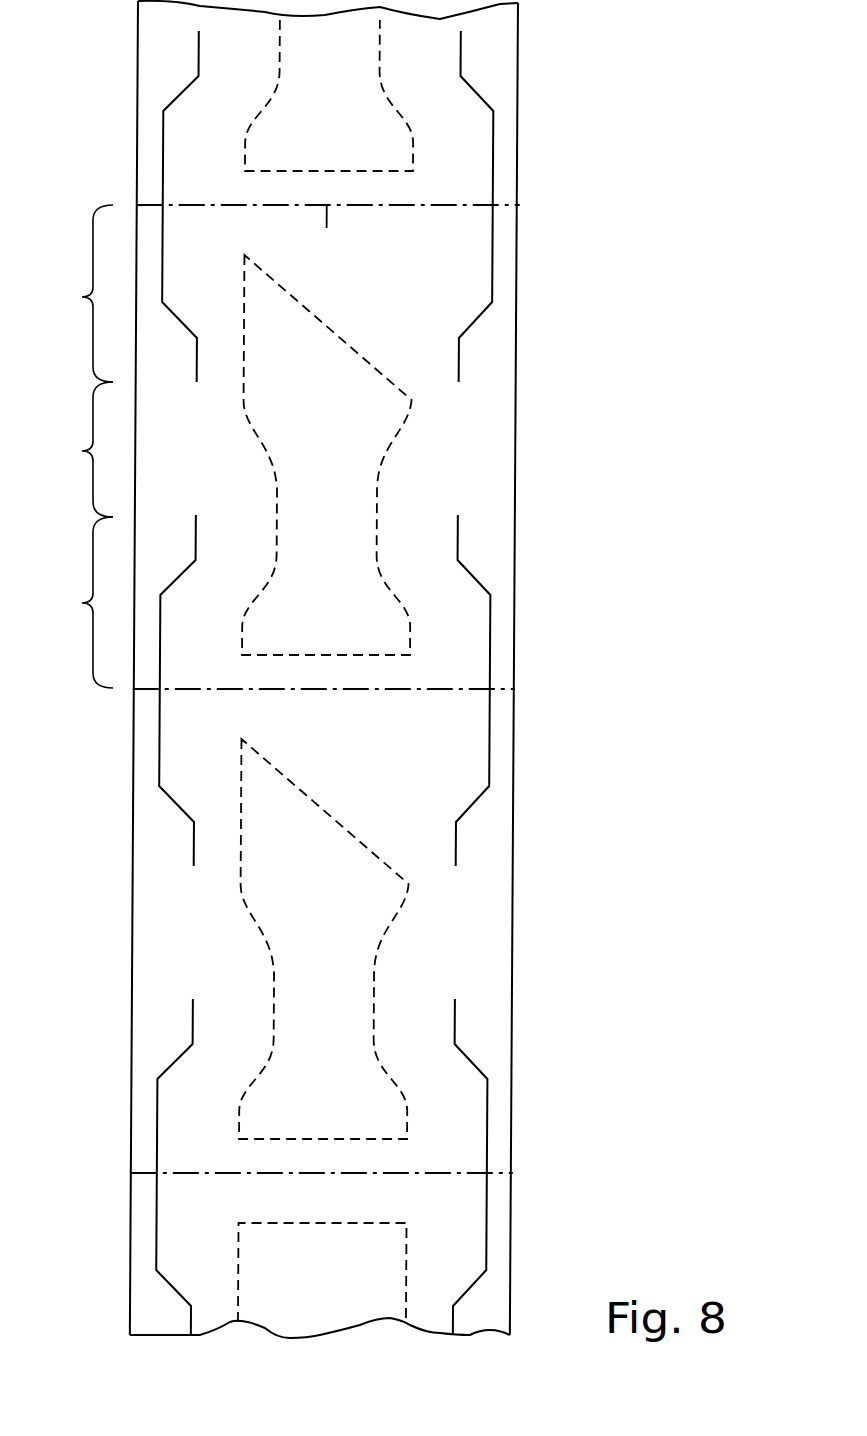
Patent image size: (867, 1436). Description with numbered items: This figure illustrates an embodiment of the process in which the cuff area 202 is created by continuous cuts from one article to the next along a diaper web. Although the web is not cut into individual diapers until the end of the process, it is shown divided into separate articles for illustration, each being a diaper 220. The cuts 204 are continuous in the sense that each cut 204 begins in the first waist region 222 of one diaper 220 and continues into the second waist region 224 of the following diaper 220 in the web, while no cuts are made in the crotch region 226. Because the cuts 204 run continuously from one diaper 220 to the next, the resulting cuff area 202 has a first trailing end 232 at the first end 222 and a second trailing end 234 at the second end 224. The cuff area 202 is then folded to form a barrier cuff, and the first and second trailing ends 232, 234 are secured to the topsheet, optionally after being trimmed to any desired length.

The diaper 220 is at (545, 401).
The cuff area 202 is at (478, 453).
The cut 204 is at (495, 280).
The second trailing end 234 is at (507, 230).
The first trailing end 232 is at (503, 630).
The second waist region 224 is at (72, 293).
The crotch region 226 is at (72, 449).
The first waist region 222 is at (72, 602).